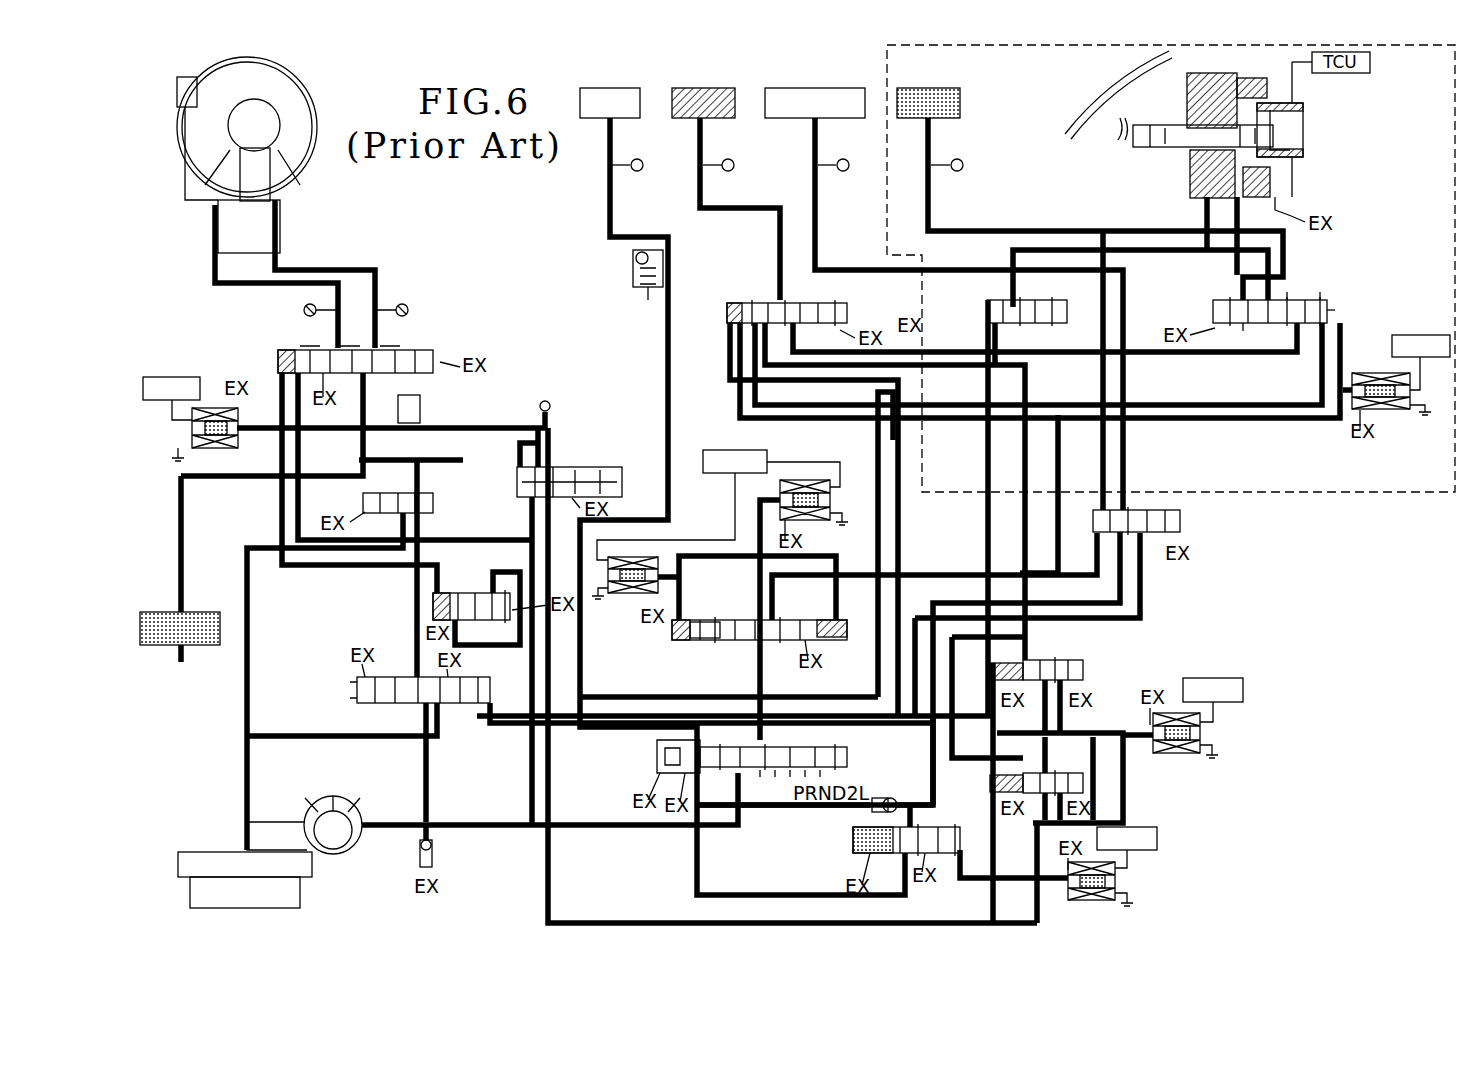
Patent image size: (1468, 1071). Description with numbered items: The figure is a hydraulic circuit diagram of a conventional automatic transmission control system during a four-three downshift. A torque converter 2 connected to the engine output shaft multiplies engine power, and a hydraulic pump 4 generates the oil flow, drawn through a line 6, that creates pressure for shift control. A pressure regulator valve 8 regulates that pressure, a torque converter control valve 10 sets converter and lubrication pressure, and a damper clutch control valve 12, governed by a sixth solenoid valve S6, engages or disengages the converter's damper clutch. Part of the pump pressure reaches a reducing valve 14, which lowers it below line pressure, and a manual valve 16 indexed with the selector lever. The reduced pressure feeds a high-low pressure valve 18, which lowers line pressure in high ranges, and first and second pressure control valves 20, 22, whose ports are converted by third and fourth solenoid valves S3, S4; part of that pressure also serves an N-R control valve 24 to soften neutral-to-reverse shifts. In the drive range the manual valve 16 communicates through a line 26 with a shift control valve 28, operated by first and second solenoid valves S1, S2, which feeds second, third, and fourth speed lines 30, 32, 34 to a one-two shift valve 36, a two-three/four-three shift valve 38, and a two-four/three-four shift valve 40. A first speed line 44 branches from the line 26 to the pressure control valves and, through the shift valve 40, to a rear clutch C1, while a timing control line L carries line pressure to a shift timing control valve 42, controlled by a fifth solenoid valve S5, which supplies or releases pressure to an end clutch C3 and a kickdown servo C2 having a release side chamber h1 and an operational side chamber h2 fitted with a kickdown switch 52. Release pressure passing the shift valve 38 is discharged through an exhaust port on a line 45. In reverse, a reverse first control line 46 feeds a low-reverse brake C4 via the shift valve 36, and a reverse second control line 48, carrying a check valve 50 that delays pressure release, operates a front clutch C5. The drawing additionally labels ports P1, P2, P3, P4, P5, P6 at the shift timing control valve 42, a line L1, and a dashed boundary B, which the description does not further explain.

The torque converter 2 is at (330, 95).
The hydraulic pump 4 is at (333, 857).
The main line 6 is at (388, 820).
The pressure regulator valve 8 is at (352, 690).
The torque converter control valve 10 is at (437, 503).
The damper clutch control valve 12 is at (445, 347).
The reducing valve 14 is at (592, 464).
The manual valve 16 is at (652, 757).
The high-low pressure valve 18 is at (470, 590).
The first pressure control valve 20 is at (985, 790).
The second pressure control valve 22 is at (1085, 670).
The N-R control valve 24 is at (848, 845).
The line 26 is at (755, 676).
The shift control valve 28 is at (700, 645).
The second speed line 30 is at (855, 572).
The third speed line 32 is at (983, 462).
The fourth speed line 34 is at (900, 525).
The 1-2 shift valve 36 is at (1185, 520).
The 2-3/4-3 shift valve 38 is at (983, 312).
The 2-4/3-4 shift valve 40 is at (745, 292).
The shift timing control valve 42 is at (1207, 308).
The first speed line 44 is at (893, 720).
The line 45 is at (892, 350).
The reverse first control line 46 is at (930, 783).
The reverse second control line 48 is at (665, 345).
The check valve 50 is at (628, 268).
The kickdown switch 52 is at (1305, 112).
The rear clutch C1 is at (702, 86).
The kickdown servo C2 is at (1172, 168).
The end clutch C3 is at (928, 86).
The low-reverse brake C4 is at (815, 86).
The front clutch C5 is at (610, 86).
The first solenoid valve S1 is at (805, 478).
The second solenoid valve S2 is at (625, 610).
The third solenoid valve S3 is at (1122, 885).
The fourth solenoid valve S4 is at (1207, 735).
The fifth solenoid valve S5 is at (1392, 413).
The sixth solenoid valve S6 is at (214, 405).
The port P1 is at (1247, 337).
The port P2 is at (1308, 333).
The port P3 is at (1335, 325).
The port P4 is at (1237, 289).
The port P5 is at (1288, 295).
The port P6 is at (1318, 297).
The release side chamber h1 is at (1200, 190).
The operational side chamber h2 is at (1270, 180).
The timing control line L is at (1267, 422).
The line L1 is at (1063, 462).
The hydraulic control block B is at (1330, 495).